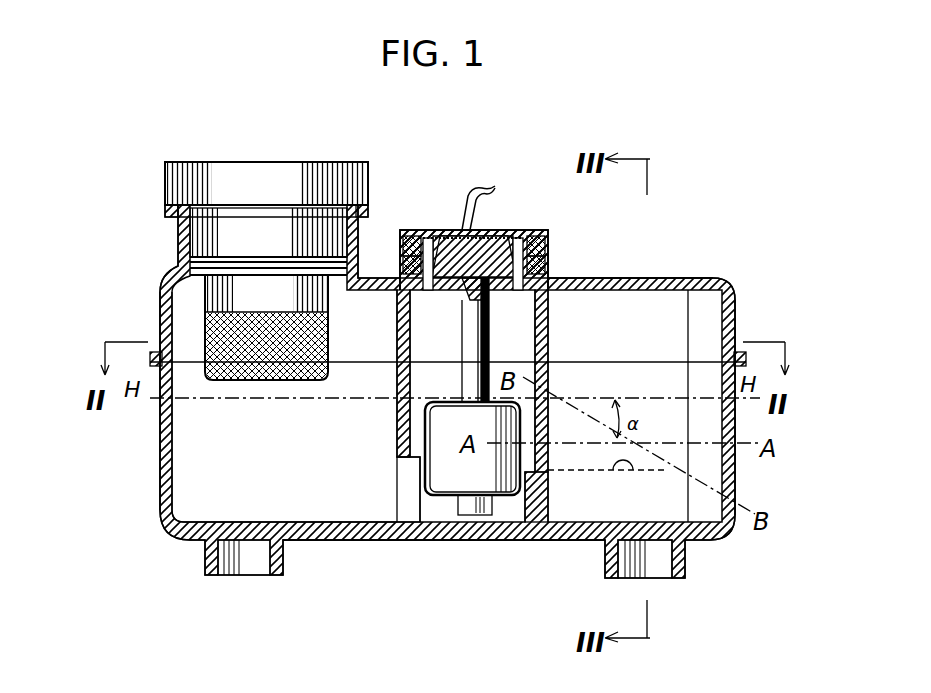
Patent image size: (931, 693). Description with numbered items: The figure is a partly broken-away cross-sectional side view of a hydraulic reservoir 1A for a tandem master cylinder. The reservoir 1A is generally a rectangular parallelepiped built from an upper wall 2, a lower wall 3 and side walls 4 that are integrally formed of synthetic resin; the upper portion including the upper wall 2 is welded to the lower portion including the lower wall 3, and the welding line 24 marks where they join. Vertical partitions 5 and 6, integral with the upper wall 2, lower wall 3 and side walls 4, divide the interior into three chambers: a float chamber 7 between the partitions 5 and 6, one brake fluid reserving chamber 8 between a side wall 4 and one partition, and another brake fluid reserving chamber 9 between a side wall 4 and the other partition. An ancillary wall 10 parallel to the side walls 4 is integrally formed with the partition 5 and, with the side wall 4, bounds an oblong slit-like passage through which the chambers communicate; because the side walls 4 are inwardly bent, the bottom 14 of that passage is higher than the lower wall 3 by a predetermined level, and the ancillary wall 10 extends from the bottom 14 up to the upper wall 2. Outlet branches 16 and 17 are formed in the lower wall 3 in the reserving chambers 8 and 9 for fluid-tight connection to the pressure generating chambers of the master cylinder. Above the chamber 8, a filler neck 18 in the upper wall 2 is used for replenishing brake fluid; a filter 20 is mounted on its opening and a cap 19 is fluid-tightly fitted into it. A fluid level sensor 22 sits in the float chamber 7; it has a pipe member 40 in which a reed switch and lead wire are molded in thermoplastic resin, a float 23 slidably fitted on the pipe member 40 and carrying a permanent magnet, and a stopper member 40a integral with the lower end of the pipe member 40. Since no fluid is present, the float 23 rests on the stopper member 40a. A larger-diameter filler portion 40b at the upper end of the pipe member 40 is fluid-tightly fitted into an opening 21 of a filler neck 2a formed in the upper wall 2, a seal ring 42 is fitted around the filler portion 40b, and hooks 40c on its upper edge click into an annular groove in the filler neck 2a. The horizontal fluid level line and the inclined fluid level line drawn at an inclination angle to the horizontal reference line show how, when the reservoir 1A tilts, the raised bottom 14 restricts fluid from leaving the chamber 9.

The hydraulic reservoir 1A is at (737, 210).
The upper wall 2 is at (676, 282).
The filler neck 2a is at (405, 245).
The lower wall 3 is at (344, 530).
The side walls 4 is at (163, 420).
The partition 5 is at (543, 322).
The partition 6 is at (390, 313).
The float chamber 7 is at (415, 457).
The brake fluid reserving chamber 8 is at (223, 475).
The brake fluid reserving chamber 9 is at (582, 497).
The ancillary wall 10 is at (626, 300).
The bottom of oblong passage 14 is at (614, 474).
The outlet branch 16 is at (673, 540).
The outlet branch 17 is at (267, 542).
The filler neck 18 is at (180, 243).
The cap 19 is at (255, 180).
The filter 20 is at (237, 335).
The opening 21 is at (491, 236).
The fluid level sensor 22 is at (457, 226).
The float 23 is at (452, 477).
The welding line 24 is at (358, 364).
The pipe member 40 is at (476, 340).
The stopper member 40a is at (487, 505).
The filler portion 40b is at (427, 238).
The hooks 40c is at (410, 262).
The seal ring 42 is at (396, 290).